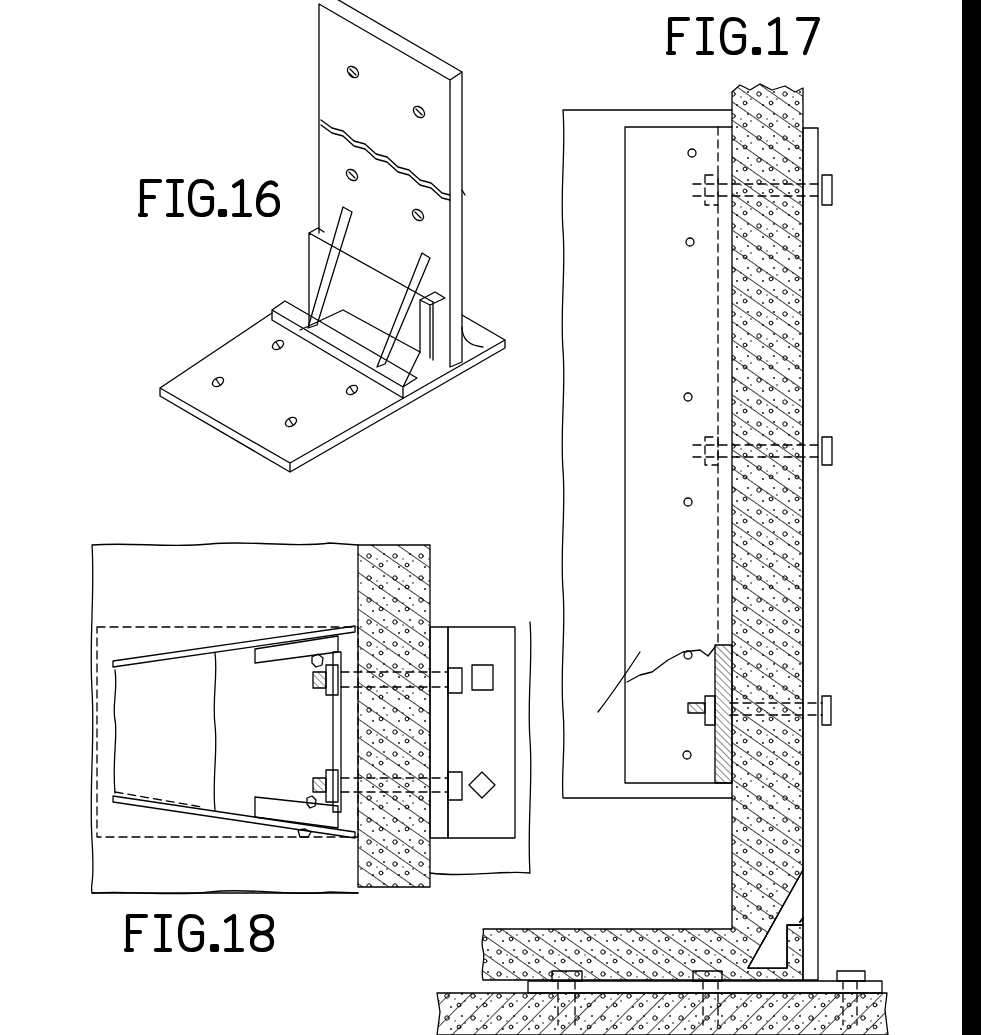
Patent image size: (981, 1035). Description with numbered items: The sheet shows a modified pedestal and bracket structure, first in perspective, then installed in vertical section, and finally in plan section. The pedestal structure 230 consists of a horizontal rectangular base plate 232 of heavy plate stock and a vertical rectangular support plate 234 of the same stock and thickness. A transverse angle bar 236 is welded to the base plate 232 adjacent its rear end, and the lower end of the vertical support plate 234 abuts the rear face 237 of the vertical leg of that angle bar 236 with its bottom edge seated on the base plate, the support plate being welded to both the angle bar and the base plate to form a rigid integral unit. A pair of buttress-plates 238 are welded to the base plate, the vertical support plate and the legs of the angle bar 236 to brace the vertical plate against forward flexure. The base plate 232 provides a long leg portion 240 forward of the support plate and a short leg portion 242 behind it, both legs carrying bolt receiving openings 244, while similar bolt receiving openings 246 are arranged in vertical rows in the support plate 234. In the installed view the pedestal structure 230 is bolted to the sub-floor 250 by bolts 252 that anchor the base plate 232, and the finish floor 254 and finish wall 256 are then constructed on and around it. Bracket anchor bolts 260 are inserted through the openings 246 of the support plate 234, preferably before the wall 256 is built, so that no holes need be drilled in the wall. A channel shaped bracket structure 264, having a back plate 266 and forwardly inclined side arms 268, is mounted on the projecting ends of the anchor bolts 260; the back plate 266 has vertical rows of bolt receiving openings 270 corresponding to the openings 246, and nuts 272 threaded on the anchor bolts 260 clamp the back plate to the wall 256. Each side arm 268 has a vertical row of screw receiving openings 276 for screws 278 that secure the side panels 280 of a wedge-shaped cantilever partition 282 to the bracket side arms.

In FIG. 16, the pedestal structure 230 is at (262, 305).
In FIG. 17, the pedestal structure 230 is at (838, 554).
In FIG. 16, the base plate 232 is at (370, 425).
In FIG. 17, the base plate 232 is at (627, 988).
In FIG. 16, the vertical support plate 234 is at (333, 152).
In FIG. 17, the vertical support plate 234 is at (813, 612).
In FIG. 18, the vertical support plate 234 is at (443, 745).
In FIG. 16, the angle bar 236 is at (367, 285).
In FIG. 17, the angle bar 236 is at (770, 973).
In FIG. 17, the rear face 237 is at (800, 928).
In FIG. 16, the buttress-plates 238 is at (322, 278).
In FIG. 17, the buttress-plates 238 is at (773, 930).
In FIG. 16, the long leg portion 240 is at (248, 352).
In FIG. 17, the long leg portion 240 is at (642, 980).
In FIG. 18, the long leg portion 240 is at (125, 642).
In FIG. 16, the short leg portion 242 is at (480, 335).
In FIG. 17, the short leg portion 242 is at (867, 979).
In FIG. 18, the short leg portion 242 is at (533, 617).
In FIG. 16, the bolt receiving openings 244 is at (285, 421).
In FIG. 16, the bolt receiving openings 246 is at (346, 72).
In FIG. 17, the sub-floor 250 is at (467, 993).
In FIG. 18, the sub-floor 250 is at (508, 855).
In FIG. 17, the bolts 252 is at (567, 969).
In FIG. 18, the bolts 252 is at (489, 793).
In FIG. 17, the finish floor 254 is at (553, 928).
In FIG. 18, the finish floor 254 is at (183, 567).
In FIG. 17, the finish wall 256 is at (728, 838).
In FIG. 18, the finish wall 256 is at (357, 567).
In FIG. 17, the bracket anchor bolts 260 is at (830, 178).
In FIG. 18, the bracket anchor bolts 260 is at (455, 668).
In FIG. 17, the bracket structure 264 is at (622, 588).
In FIG. 18, the bracket structure 264 is at (273, 796).
In FIG. 17, the back plate 266 is at (715, 647).
In FIG. 18, the back plate 266 is at (338, 742).
In FIG. 17, the side arms 268 is at (638, 755).
In FIG. 18, the side arms 268 is at (280, 650).
In FIG. 17, the bolt receiving openings 270 is at (713, 730).
In FIG. 18, the bolt receiving openings 270 is at (343, 707).
In FIG. 17, the nuts 272 is at (713, 203).
In FIG. 18, the nuts 272 is at (325, 688).
In FIG. 17, the screw receiving openings 276 is at (684, 396).
In FIG. 18, the screws 278 is at (305, 628).
In FIG. 17, the side panels 280 is at (593, 530).
In FIG. 18, the side panels 280 is at (225, 650).
In FIG. 18, the cantilever partition 282 is at (185, 782).